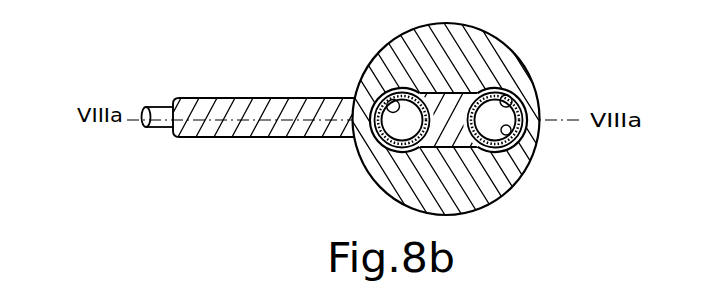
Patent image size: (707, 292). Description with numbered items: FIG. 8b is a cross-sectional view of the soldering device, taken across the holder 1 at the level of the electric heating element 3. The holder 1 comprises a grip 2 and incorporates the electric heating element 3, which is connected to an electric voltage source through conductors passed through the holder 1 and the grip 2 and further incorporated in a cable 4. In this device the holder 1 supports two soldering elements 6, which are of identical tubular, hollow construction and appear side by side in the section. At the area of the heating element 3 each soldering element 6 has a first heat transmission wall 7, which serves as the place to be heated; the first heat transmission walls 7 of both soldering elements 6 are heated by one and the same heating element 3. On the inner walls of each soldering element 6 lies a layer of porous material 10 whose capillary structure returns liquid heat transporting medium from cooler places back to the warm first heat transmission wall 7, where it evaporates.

The holder 1 is at (497, 168).
The grip 2 is at (245, 124).
The electric heating element 3 is at (447, 124).
The cable 4 is at (160, 124).
The soldering element 6 is at (396, 95).
The first heat transmission wall 7 is at (470, 150).
The layer of porous material 10 is at (374, 100).